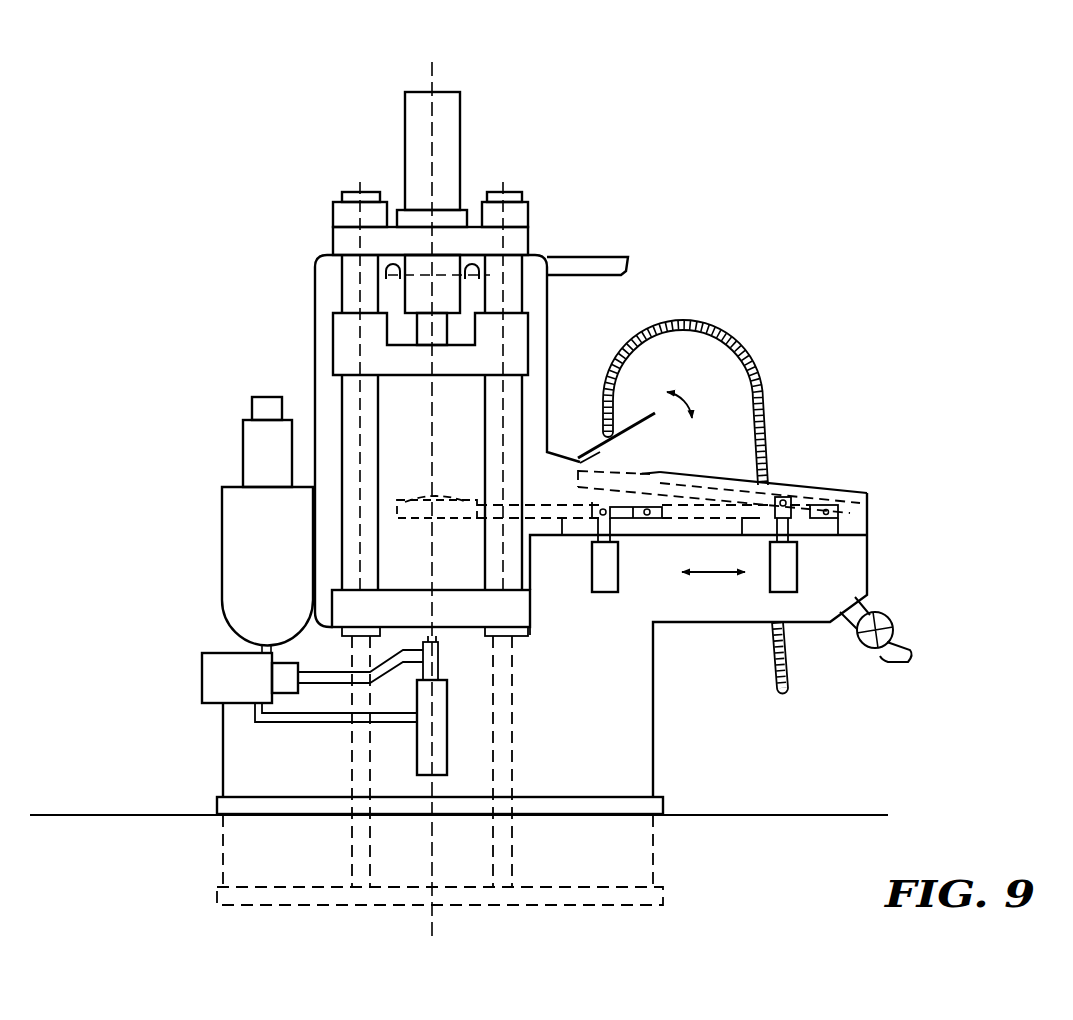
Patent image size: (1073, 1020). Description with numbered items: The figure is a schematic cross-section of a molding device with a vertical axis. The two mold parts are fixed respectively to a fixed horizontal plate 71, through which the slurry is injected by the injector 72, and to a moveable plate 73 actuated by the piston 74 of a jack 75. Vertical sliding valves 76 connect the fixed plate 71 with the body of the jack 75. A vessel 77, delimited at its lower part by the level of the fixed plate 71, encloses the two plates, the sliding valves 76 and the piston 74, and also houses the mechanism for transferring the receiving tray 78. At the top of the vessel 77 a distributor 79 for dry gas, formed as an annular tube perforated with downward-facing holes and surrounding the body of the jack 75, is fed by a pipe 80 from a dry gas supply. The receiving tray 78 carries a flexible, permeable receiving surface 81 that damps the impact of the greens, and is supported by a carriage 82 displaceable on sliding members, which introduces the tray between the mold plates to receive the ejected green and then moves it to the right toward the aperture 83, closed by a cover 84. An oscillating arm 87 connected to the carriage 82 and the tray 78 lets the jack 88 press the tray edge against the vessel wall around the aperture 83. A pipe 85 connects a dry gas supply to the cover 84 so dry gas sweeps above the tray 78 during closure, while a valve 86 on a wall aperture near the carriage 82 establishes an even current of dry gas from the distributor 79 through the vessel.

The fixed horizontal plate 71 is at (517, 607).
The injector 72 is at (413, 751).
The moveable plate 73 is at (516, 352).
The piston 74 is at (415, 333).
The jack 75 is at (403, 296).
The vertical sliding valves 76 is at (372, 553).
The vessel 77 is at (552, 315).
The receiving tray 78 is at (455, 497).
The distributor 79 is at (472, 249).
The pipe 80 is at (600, 252).
The flexible, permeable receiving surface 81 is at (417, 497).
The carriage 82 is at (646, 530).
The aperture 83 is at (600, 458).
The cover 84 is at (637, 421).
The pipe 85 is at (742, 338).
The valve 86 is at (873, 655).
The oscillating arm 87 is at (763, 500).
The jack 88 is at (787, 572).